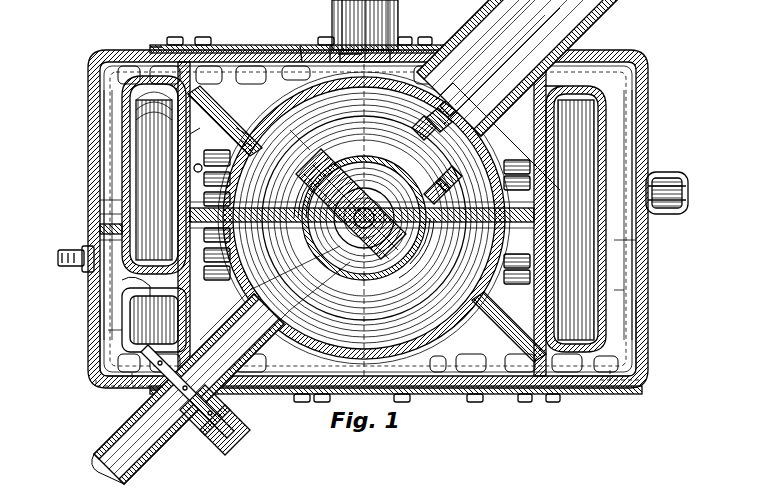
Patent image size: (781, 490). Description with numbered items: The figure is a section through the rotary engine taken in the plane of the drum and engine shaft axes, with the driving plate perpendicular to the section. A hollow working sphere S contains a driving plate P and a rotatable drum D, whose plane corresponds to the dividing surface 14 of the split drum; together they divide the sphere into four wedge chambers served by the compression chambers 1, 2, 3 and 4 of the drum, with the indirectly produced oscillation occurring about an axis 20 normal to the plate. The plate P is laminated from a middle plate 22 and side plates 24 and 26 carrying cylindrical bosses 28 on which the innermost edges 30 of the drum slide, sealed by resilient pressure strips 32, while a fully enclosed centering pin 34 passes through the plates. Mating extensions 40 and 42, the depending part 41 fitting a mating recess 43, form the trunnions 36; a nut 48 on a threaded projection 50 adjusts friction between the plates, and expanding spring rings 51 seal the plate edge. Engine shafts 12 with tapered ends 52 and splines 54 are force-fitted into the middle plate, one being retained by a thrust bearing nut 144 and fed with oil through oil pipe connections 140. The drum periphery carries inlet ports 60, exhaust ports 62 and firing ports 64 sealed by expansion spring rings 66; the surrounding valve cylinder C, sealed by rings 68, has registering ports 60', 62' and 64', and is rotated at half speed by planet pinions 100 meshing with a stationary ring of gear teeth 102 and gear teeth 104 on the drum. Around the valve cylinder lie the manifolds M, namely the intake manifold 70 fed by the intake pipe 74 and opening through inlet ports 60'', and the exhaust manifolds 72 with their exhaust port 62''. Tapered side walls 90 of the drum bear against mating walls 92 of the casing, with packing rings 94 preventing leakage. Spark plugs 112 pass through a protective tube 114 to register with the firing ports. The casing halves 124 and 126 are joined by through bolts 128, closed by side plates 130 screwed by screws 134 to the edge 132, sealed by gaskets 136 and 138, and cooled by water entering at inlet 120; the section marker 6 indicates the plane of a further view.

The engine shafts 12 is at (112, 452).
The dividing surface 14 is at (252, 188).
The axis 20 is at (342, 172).
The middle plate 22 is at (360, 158).
The side plate 24 is at (392, 154).
The side plate 26 is at (436, 198).
The cylindrical bosses 28 is at (336, 160).
The innermost edges 30 is at (318, 194).
The resilient pressure strips 32 is at (246, 228).
The centering pin 34 is at (320, 182).
The trunnions 36 is at (326, 262).
The extension 40 is at (336, 242).
The depending part 41 is at (420, 216).
The extension 42 is at (344, 258).
The mating recess 43 is at (372, 302).
The nut 48 is at (380, 272).
The threaded projection 50 is at (354, 222).
The expanding spring rings 51 is at (324, 280).
The tapered ends 52 is at (455, 179).
The splines 54 is at (412, 128).
The inlet ports 60 is at (367, 209).
The inlet ports 60' is at (343, 227).
The inlet ports 60'' is at (366, 214).
The exhaust ports 62 is at (367, 217).
The exhaust ports 62' is at (396, 309).
The exhaust port 62'' is at (369, 215).
The firing ports 64 is at (367, 259).
The firing ports 64' is at (367, 174).
The expansion spring rings 66 is at (190, 140).
The expansion spring rings 68 is at (194, 170).
The intake manifold 70 is at (118, 172).
The exhaust manifolds 72 is at (140, 112).
The intake pipe 74 is at (672, 190).
The tapered side walls 90 is at (222, 100).
The mating walls 92 is at (250, 96).
The packing rings 94 is at (438, 124).
The planet pinions 100 is at (556, 118).
The stationary ring of gear teeth 102 is at (556, 112).
The rotatable ring of gear teeth 104 is at (160, 306).
The spark plugs 112 is at (64, 266).
The protective tube 114 is at (130, 282).
The inlet 120 is at (382, 14).
The casing half 124 is at (92, 330).
The casing half 126 is at (92, 78).
The through bolts 128 is at (92, 380).
The side plates 130 is at (300, 46).
The edge 132 is at (150, 48).
The screws 134 is at (173, 36).
The gasket 136 is at (104, 236).
The gasket 138 is at (164, 44).
The oil pipe connections 140 is at (240, 436).
The thrust bearing nut 144 is at (190, 462).
The valve cylinder C is at (648, 154).
The manifolds M is at (180, 150).
The driving plate P is at (364, 233).
The working sphere S is at (312, 118).
The drum D is at (302, 168).
The compression chamber 1 is at (262, 247).
The compression chamber 2 is at (54, 294).
The compression chamber 3 is at (478, 190).
The compression chamber 4 is at (248, 181).
The section 6 is at (58, 260).